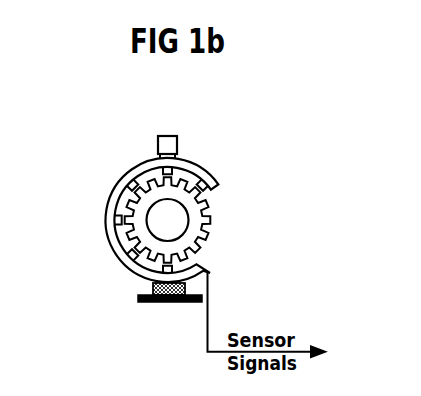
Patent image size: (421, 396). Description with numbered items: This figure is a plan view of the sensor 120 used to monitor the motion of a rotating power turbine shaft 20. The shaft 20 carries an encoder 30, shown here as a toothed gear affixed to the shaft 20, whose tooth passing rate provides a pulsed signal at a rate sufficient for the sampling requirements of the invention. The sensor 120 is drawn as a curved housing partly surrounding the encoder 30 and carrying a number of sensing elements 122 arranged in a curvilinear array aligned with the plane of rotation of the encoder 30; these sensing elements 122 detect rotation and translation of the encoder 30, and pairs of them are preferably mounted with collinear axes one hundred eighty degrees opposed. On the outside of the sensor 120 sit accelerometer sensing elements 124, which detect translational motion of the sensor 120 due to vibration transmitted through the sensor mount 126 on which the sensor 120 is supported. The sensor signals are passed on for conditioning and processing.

The sensor 120 is at (108, 197).
The sensing elements 122 is at (131, 262).
The accelerometer sensing elements 124 is at (178, 138).
The encoder 30 is at (210, 217).
The shaft 20 is at (172, 222).
The sensor mount 126 is at (140, 297).